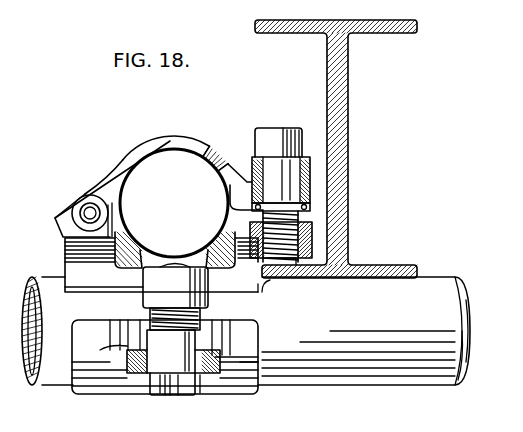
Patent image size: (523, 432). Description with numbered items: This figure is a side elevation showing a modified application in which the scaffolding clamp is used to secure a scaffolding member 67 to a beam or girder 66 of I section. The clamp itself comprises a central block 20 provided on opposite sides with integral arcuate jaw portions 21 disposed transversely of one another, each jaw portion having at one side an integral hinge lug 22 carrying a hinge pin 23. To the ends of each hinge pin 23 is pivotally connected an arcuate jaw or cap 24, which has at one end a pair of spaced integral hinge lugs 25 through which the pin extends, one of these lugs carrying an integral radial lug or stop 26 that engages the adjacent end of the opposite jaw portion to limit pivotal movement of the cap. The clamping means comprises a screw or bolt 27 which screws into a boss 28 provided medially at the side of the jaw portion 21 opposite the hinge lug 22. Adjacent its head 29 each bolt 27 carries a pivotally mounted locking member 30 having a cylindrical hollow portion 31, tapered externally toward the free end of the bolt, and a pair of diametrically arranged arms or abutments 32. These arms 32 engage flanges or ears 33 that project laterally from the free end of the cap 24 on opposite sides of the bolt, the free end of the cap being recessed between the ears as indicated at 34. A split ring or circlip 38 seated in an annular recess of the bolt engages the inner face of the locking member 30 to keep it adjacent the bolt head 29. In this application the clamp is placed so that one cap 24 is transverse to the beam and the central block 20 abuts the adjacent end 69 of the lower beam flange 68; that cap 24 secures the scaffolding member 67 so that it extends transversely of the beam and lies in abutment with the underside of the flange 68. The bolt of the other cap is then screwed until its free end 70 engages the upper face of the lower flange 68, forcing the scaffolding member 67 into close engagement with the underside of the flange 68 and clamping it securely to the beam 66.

The central block 20 is at (216, 252).
The arcuate jaw portions 21 is at (145, 255).
The hinge lug 22 is at (65, 243).
The hinge pin 23 is at (91, 208).
The arcuate jaw or cap 24 is at (178, 141).
The hinge lugs 25 is at (115, 210).
The lug or stop 26 is at (56, 220).
The screw or bolt 27 is at (312, 248).
The boss 28 is at (312, 235).
The head 29 is at (270, 140).
The locking member 30 is at (310, 160).
The cylindrical hollow portion 31 is at (253, 163).
The arms or abutments 32 is at (130, 365).
The flanges or ears 33 is at (135, 340).
The recess 34 is at (240, 196).
The split ring or circlip 38 is at (300, 203).
The beam or girder 66 is at (348, 107).
The scaffolding member 67 is at (364, 352).
The lower flange 68 is at (307, 278).
The end of beam flange 69 is at (260, 292).
The free end of bolt 70 is at (283, 266).